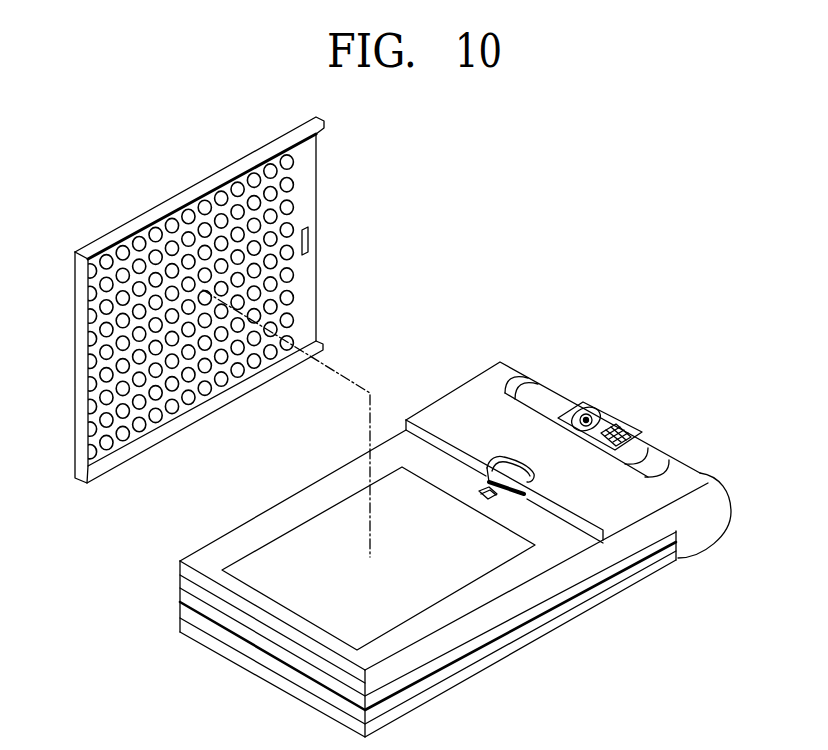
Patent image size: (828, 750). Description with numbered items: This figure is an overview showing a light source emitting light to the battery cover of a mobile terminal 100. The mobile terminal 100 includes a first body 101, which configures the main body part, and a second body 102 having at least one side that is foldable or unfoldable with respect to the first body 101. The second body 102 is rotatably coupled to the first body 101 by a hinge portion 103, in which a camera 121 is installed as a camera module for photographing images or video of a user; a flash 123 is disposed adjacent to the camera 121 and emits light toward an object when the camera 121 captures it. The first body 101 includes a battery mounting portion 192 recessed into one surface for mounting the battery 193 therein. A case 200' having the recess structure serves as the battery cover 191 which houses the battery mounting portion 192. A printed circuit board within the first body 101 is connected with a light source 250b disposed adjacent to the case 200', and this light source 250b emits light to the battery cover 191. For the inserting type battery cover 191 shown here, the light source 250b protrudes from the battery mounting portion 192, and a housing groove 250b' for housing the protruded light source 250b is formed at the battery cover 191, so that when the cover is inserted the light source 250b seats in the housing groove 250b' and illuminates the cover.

The mobile terminal 100 is at (311, 456).
The first body 101 is at (176, 566).
The second body 102 is at (176, 604).
The hinge portion 103 is at (515, 368).
The camera 121 is at (592, 415).
The flash 123 is at (620, 430).
The battery cover 191 is at (152, 212).
The battery mounting portion 192 is at (517, 577).
The battery 193 is at (412, 604).
The case 200' is at (226, 307).
The light source 250b is at (468, 424).
The housing groove 250b' is at (349, 226).